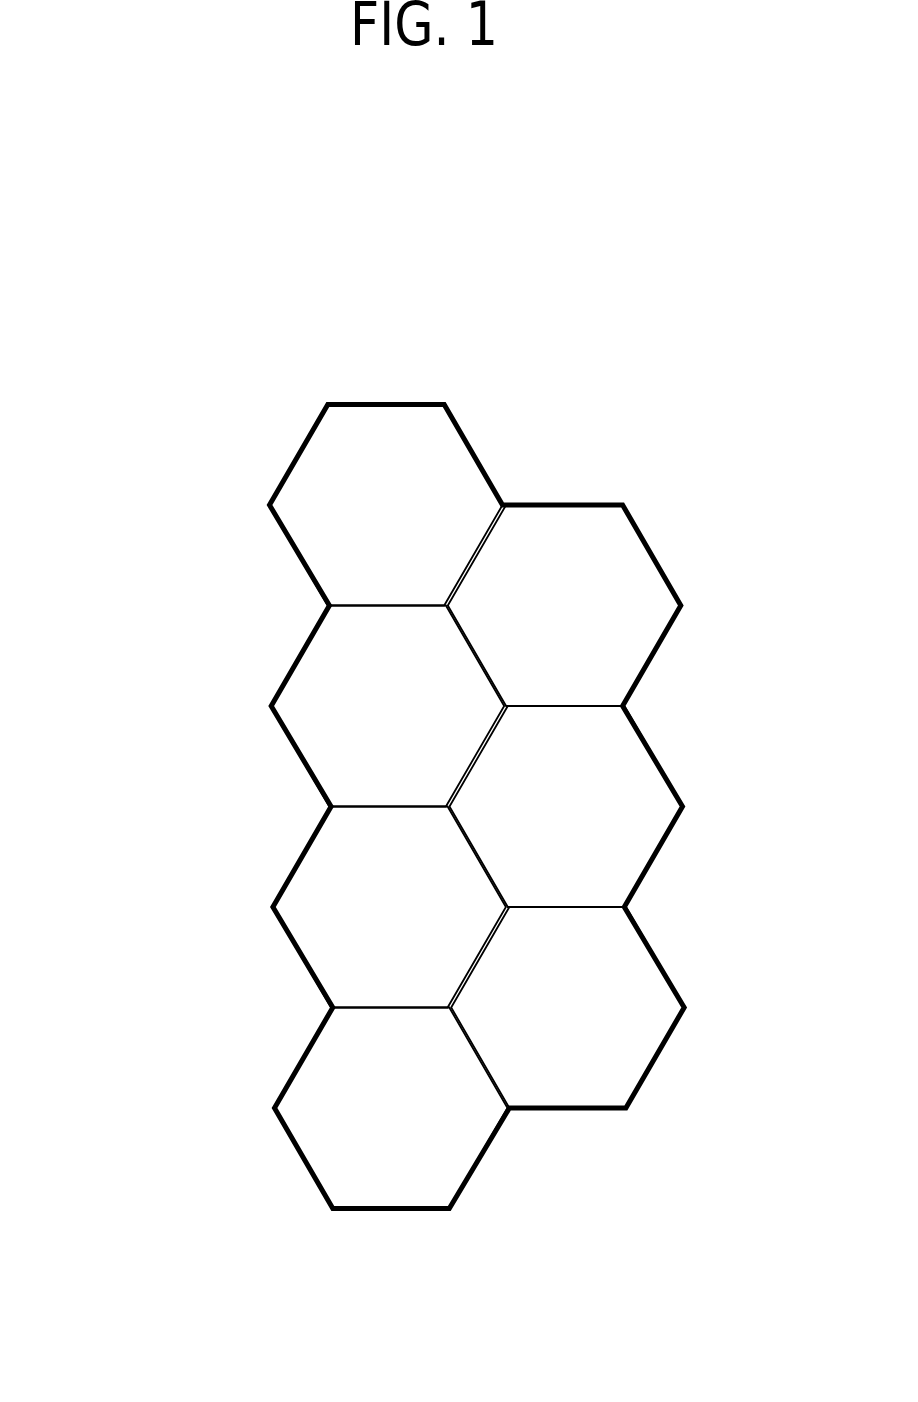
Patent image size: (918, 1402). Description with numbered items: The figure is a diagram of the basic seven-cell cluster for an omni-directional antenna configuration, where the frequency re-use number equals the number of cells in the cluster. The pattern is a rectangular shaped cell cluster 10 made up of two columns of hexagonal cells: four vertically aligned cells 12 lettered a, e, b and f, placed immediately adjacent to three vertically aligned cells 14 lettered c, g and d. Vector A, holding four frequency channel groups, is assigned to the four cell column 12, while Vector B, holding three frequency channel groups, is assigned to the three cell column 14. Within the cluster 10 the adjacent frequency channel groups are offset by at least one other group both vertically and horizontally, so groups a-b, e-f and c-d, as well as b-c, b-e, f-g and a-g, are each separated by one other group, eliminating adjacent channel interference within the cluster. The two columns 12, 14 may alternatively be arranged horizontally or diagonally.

The rectangular shaped cell cluster 10 is at (212, 780).
The four vertically aligned cells 12 is at (410, 390).
The three vertically aligned cells 14 is at (553, 488).